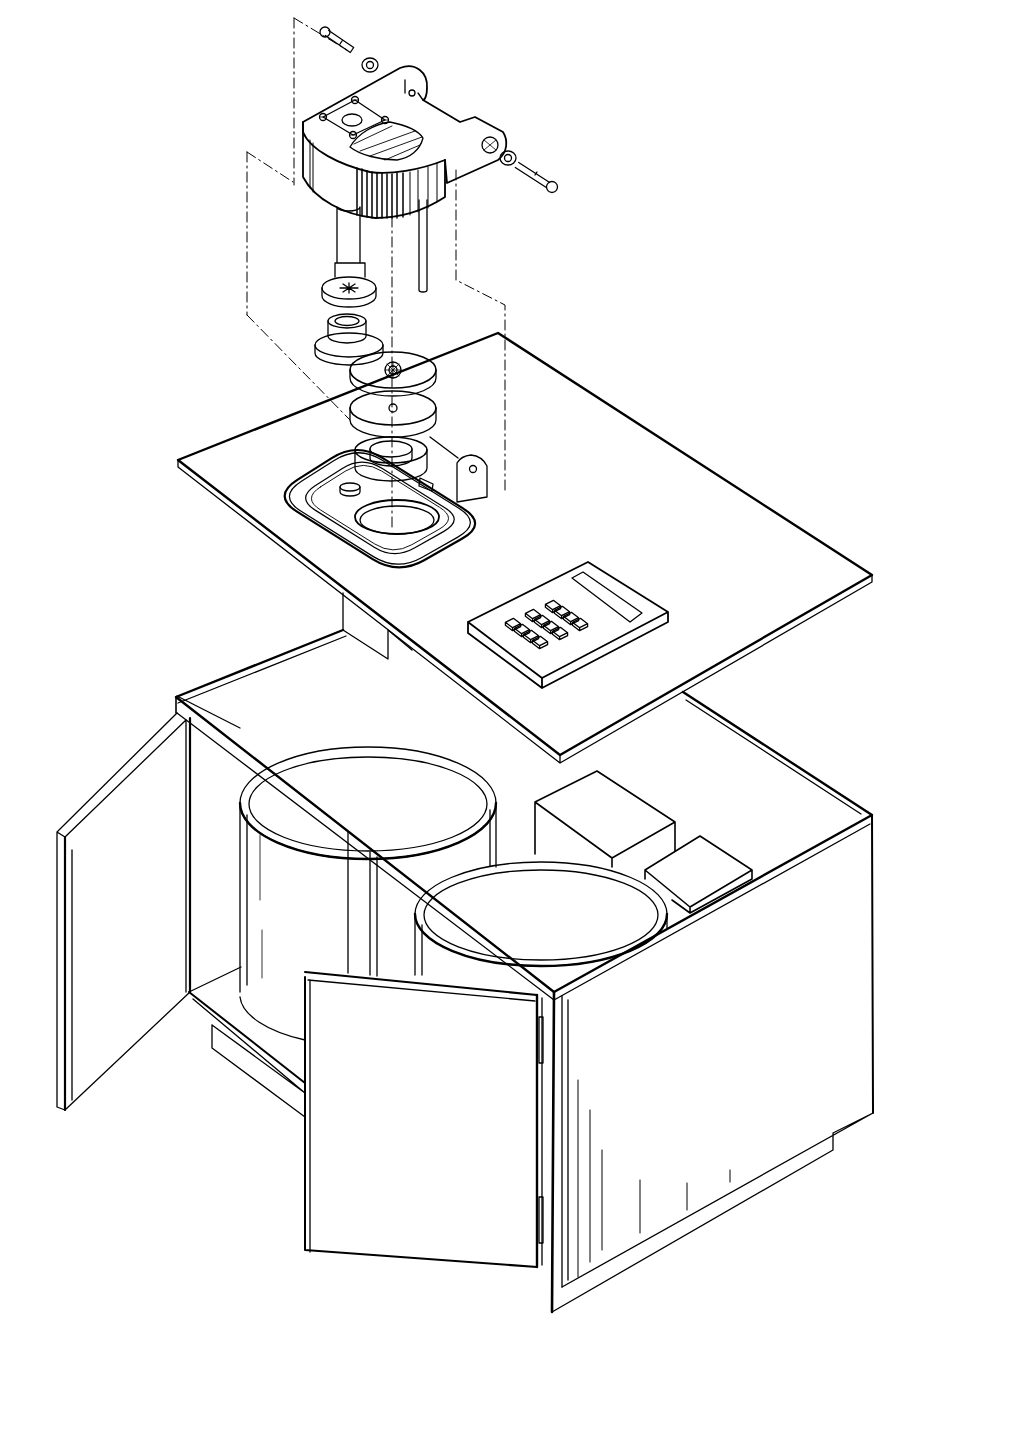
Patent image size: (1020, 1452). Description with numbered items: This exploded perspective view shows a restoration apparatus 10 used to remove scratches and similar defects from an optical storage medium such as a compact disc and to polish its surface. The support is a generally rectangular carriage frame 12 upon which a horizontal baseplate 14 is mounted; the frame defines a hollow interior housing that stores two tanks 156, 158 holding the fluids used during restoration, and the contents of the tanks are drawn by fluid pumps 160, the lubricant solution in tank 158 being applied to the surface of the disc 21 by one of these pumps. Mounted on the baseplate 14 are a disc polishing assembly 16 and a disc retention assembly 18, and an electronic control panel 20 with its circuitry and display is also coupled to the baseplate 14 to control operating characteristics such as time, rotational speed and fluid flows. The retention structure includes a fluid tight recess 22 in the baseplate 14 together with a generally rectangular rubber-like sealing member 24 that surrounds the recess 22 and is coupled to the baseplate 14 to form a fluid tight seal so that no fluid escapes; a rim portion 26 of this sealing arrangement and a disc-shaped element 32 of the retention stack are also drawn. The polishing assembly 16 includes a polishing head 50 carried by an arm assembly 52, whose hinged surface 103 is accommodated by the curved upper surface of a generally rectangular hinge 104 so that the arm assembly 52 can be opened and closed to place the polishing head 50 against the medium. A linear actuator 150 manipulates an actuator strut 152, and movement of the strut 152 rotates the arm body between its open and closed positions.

The restoration apparatus 10 is at (693, 208).
The carriage frame 12 is at (225, 1143).
The baseplate 14 is at (773, 520).
The disc polishing assembly 16 is at (297, 256).
The disc retention assembly 18 is at (340, 415).
The electronic control panel 20 is at (630, 567).
The disc 21 is at (410, 352).
The fluid tight recess 22 is at (370, 522).
The sealing member 24 is at (303, 486).
The tray rim 26 is at (484, 518).
The lower disk 32 is at (445, 405).
The polishing head 50 is at (312, 360).
The arm assembly 52 is at (287, 138).
The hinged surface 103 is at (437, 113).
The hinge 104 is at (462, 448).
The linear actuator 150 is at (355, 610).
The actuator strut 152 is at (423, 247).
The tank 156 is at (392, 814).
The tank 158 is at (565, 927).
The fluid pumps 160 is at (700, 868).